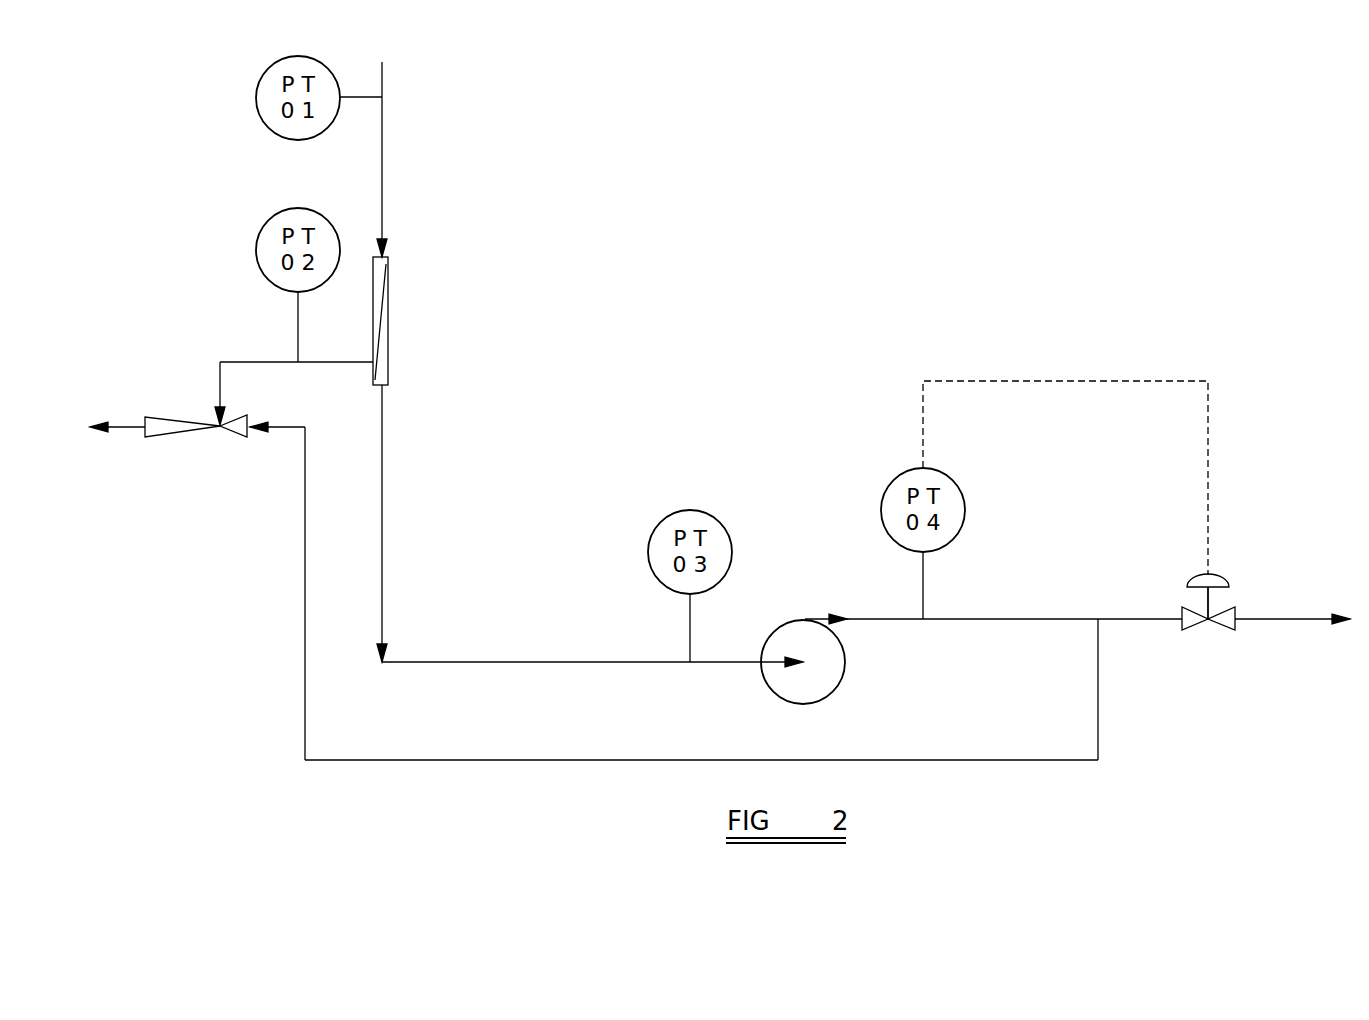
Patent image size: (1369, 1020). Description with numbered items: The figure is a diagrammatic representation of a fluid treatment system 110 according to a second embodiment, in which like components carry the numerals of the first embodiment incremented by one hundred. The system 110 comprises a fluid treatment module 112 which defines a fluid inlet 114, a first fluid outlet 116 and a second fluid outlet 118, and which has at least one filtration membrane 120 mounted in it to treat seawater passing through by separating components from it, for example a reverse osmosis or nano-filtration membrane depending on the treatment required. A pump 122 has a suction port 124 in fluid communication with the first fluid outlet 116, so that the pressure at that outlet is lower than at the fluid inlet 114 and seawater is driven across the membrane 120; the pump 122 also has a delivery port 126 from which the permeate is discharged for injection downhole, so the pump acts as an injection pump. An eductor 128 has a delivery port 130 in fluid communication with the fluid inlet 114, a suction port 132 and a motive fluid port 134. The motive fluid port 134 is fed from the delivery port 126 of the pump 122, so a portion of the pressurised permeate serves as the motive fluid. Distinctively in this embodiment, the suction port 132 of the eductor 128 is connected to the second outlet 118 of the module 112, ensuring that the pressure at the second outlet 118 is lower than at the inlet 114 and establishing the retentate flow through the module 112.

The fluid treatment system 110 is at (683, 303).
The fluid treatment module 112 is at (373, 262).
The fluid inlet 114 is at (388, 257).
The first fluid outlet 116 is at (385, 388).
The second fluid outlet 118 is at (373, 360).
The filtration membrane 120 is at (388, 323).
The pump 122 is at (803, 618).
The suction port 124 is at (760, 664).
The delivery port 126 is at (838, 618).
The eductor 128 is at (185, 418).
The delivery port 130 is at (143, 429).
The suction port 132 is at (218, 424).
The motive fluid port 134 is at (250, 432).